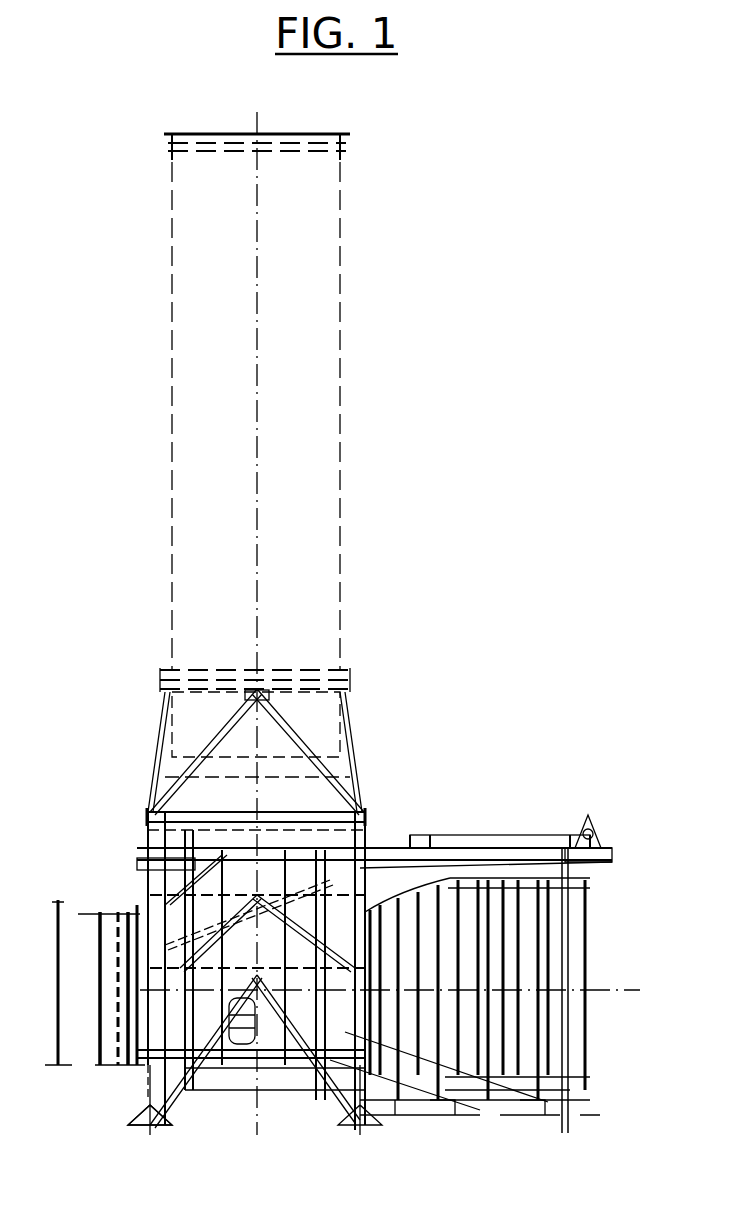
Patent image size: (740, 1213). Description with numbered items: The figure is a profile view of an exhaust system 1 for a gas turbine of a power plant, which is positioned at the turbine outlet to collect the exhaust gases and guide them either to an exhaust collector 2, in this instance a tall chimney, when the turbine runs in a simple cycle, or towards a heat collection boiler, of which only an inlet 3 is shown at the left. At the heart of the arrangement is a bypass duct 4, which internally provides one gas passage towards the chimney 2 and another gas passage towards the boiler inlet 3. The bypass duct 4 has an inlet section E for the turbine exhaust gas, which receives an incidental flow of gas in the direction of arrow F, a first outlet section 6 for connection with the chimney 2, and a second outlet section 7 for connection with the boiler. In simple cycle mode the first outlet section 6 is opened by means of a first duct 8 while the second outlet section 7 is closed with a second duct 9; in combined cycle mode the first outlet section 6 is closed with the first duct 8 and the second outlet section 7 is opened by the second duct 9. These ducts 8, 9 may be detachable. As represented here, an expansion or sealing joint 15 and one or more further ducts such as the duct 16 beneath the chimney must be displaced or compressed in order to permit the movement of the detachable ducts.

The exhaust system 1 is at (128, 1118).
The exhaust collector 2 is at (360, 462).
The inlet 3 is at (78, 1068).
The bypass duct 4 is at (240, 1078).
The first outlet section 6 is at (278, 893).
The second outlet section 7 is at (184, 1020).
The first duct 8 is at (181, 853).
The second duct 9 is at (135, 912).
The expansion or sealing joint 15 is at (115, 912).
The duct 16 is at (315, 792).
The inlet section E is at (345, 1036).
The arrow F is at (672, 990).